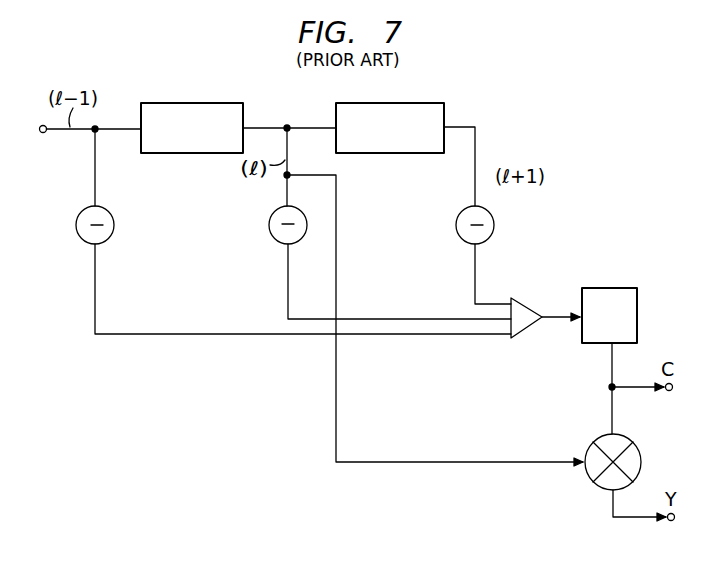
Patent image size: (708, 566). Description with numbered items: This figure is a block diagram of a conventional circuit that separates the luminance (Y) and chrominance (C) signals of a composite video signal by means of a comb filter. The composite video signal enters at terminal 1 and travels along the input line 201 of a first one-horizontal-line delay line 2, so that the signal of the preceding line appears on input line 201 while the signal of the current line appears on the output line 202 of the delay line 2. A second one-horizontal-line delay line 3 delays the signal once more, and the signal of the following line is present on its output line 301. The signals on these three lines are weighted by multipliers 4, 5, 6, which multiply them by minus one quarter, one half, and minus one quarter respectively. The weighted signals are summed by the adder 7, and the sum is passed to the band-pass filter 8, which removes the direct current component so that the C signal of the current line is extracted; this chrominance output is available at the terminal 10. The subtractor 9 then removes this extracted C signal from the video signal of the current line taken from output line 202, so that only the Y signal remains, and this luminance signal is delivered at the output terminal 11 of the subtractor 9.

The terminal 1 is at (42, 133).
The input line 201 is at (124, 127).
The 1H delay line 2 is at (205, 103).
The output line 202 is at (274, 127).
The 1H delay line 3 is at (402, 103).
The output line 301 is at (477, 152).
The multiplier 4 is at (86, 243).
The multiplier 5 is at (280, 243).
The multiplier 6 is at (462, 243).
The adder 7 is at (525, 339).
The band-pass filter 8 is at (580, 344).
The subtractor 9 is at (590, 480).
The chrominance output terminal 10 is at (669, 391).
The output terminal 11 is at (669, 523).